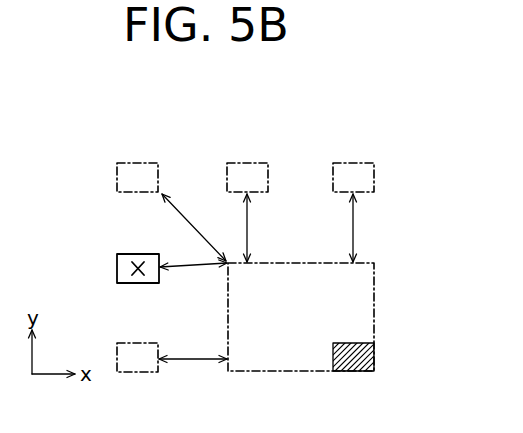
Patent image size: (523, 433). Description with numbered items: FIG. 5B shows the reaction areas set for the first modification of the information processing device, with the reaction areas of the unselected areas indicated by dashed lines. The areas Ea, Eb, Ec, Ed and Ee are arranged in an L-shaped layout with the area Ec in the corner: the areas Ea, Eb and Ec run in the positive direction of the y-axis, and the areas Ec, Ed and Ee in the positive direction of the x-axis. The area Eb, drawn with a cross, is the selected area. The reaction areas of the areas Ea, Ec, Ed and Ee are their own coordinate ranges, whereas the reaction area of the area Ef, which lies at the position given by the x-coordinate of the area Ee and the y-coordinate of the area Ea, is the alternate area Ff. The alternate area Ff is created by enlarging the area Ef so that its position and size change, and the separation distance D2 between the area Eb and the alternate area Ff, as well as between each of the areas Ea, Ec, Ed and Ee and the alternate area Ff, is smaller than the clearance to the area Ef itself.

The area Ea is at (146, 330).
The area Eb is at (135, 254).
The area Ec is at (146, 150).
The area Ed is at (260, 150).
The area Ee is at (368, 150).
The area Ef is at (375, 338).
The alternate area Ff is at (378, 263).
The separation distance D2 is at (193, 278).